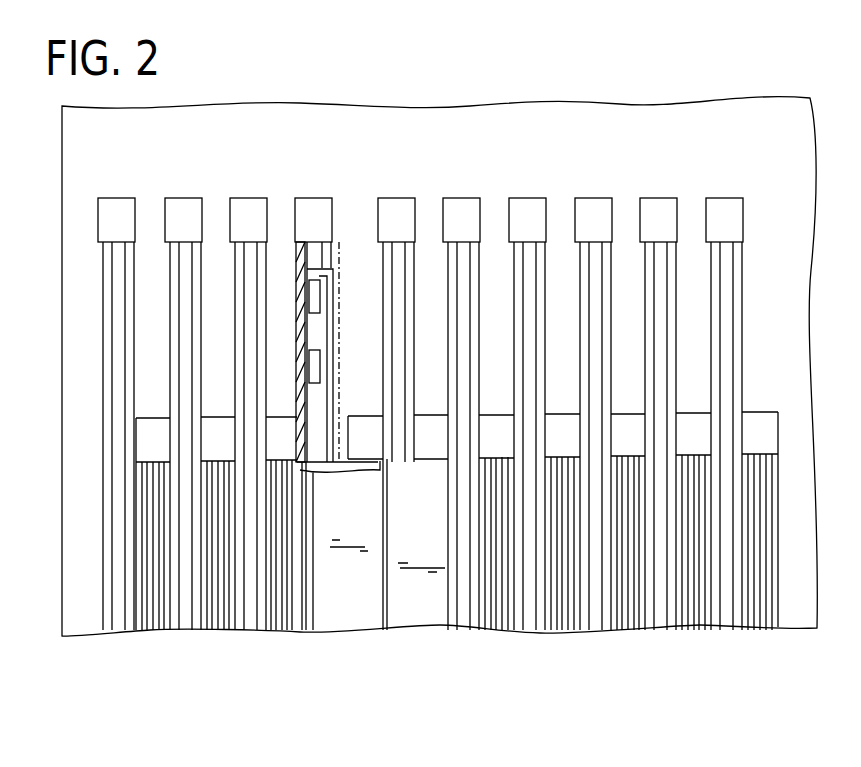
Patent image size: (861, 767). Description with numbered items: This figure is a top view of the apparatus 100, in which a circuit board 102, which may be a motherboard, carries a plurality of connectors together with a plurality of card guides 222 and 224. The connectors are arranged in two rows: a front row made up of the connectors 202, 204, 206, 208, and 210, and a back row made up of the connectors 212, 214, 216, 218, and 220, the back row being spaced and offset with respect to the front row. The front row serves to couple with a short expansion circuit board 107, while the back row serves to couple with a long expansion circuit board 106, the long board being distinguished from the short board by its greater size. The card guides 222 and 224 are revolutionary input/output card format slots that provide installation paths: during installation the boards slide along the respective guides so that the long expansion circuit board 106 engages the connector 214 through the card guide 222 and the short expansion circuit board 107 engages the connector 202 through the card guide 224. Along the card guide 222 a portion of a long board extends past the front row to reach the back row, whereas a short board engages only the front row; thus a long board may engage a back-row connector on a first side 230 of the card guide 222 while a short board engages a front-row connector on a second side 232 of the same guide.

The apparatus 100 is at (541, 75).
The circuit board 102 is at (688, 72).
The long expansion circuit board 106 is at (344, 645).
The short expansion circuit board 107 is at (435, 642).
The connector 202 is at (433, 445).
The connector 204 is at (352, 448).
The connector 206 is at (287, 443).
The connector 208 is at (221, 443).
The connector 210 is at (154, 443).
The connector 212 is at (401, 222).
The connector 214 is at (317, 222).
The connector 216 is at (252, 222).
The connector 218 is at (187, 222).
The connector 220 is at (120, 222).
The card guide 222 is at (329, 636).
The card guide 224 is at (408, 635).
The first side 230 is at (326, 455).
The second side 232 is at (353, 462).